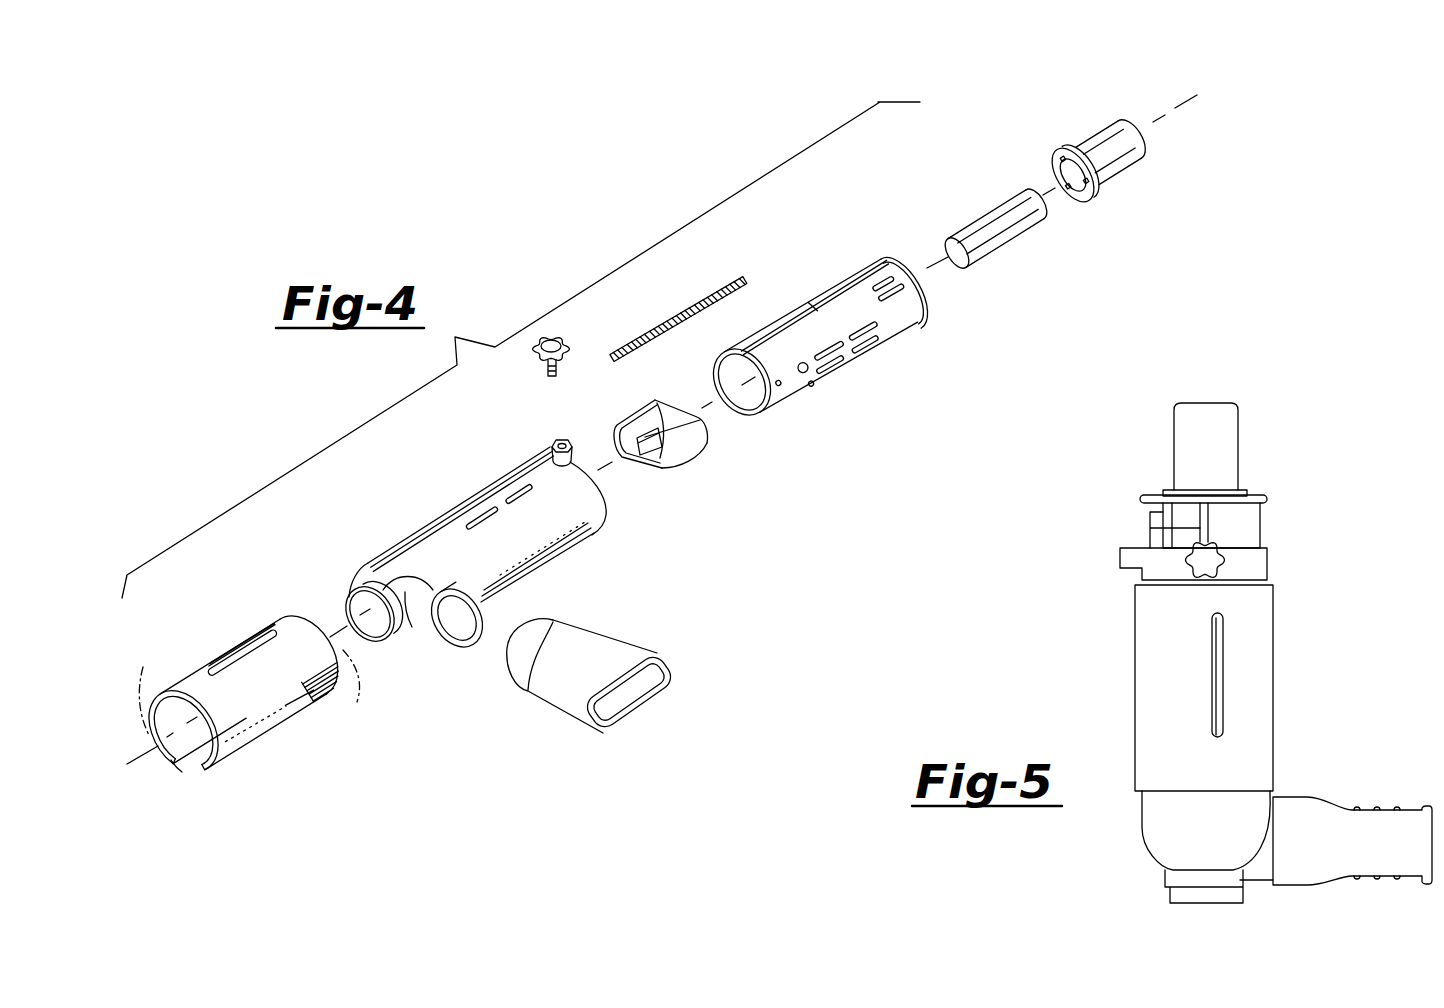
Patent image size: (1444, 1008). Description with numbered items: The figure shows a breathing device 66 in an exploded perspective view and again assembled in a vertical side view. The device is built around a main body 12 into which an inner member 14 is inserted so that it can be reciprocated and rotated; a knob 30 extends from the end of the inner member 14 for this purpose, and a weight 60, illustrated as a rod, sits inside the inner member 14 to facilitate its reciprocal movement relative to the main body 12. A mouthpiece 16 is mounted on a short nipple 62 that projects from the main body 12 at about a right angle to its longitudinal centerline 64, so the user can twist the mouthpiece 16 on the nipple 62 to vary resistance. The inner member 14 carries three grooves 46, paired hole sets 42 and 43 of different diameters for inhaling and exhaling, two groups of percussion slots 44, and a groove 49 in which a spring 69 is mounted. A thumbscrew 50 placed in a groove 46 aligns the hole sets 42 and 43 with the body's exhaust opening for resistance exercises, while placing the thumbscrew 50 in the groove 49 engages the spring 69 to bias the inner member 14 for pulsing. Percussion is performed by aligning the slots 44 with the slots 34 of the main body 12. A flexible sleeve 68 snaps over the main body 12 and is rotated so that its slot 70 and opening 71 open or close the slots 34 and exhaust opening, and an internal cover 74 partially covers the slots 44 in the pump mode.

In FIG. 4, the main body 12 is at (435, 555).
In FIG. 5, the main body 12 is at (1175, 835).
In FIG. 4, the inner member 14 is at (847, 277).
In FIG. 5, the inner member 14 is at (1252, 520).
In FIG. 4, the mouthpiece 16 is at (570, 690).
In FIG. 5, the mouthpiece 16 is at (1368, 823).
In FIG. 4, the knob 30 is at (1117, 148).
In FIG. 4, the slots 34 is at (518, 490).
In FIG. 4, the hole sets 42 is at (806, 375).
In FIG. 4, the hole sets 43 is at (780, 388).
In FIG. 4, the percussion slots 44 is at (863, 348).
In FIG. 4, the grooves 46 is at (896, 282).
In FIG. 5, the grooves 46 is at (1160, 527).
In FIG. 4, the groove 49 is at (810, 302).
In FIG. 4, the thumbscrew 50 is at (563, 350).
In FIG. 5, the thumbscrew 50 is at (1215, 563).
In FIG. 4, the weight 60 is at (997, 218).
In FIG. 4, the nipple 62 is at (418, 622).
In FIG. 4, the longitudinal centerline 64 is at (148, 684).
In FIG. 4, the breathing device 66 is at (523, 418).
In FIG. 4, the flexible sleeve 68 is at (243, 682).
In FIG. 5, the flexible sleeve 68 is at (1170, 745).
In FIG. 4, the spring 69 is at (692, 310).
In FIG. 4, the slot 70 is at (257, 636).
In FIG. 5, the slot 70 is at (1215, 690).
In FIG. 4, the opening 71 is at (190, 758).
In FIG. 4, the internal cover 74 is at (683, 452).